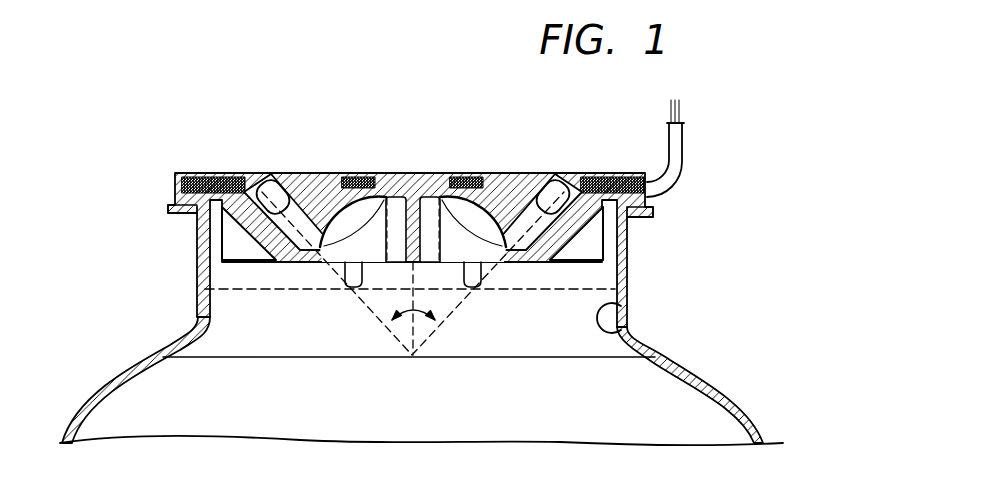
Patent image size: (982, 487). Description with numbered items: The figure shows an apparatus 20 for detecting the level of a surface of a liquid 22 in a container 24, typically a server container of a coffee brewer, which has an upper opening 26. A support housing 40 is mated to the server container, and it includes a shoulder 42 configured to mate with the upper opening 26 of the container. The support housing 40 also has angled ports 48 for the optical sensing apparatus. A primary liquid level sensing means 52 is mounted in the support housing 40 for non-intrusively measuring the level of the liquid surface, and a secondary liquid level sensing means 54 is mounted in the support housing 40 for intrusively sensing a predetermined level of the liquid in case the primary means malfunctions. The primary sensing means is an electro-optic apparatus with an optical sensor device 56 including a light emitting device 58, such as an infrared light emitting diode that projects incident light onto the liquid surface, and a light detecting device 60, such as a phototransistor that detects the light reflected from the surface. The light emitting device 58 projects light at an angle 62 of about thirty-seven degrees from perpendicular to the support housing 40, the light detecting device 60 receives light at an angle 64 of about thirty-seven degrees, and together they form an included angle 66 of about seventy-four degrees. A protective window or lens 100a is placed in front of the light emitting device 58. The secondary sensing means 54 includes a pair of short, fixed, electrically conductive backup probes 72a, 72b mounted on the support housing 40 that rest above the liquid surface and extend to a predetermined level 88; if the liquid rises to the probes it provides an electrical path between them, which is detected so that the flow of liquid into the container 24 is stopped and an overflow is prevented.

The apparatus 20 is at (703, 190).
The liquid 22 is at (273, 350).
The container 24 is at (750, 393).
The upper opening 26 is at (630, 333).
The support housing 40 is at (175, 188).
The shoulder 42 is at (641, 219).
The angled ports 48 is at (297, 215).
The primary liquid level sensing means 52 is at (345, 160).
The secondary liquid level sensing means 54 is at (483, 300).
The optical sensor device 56 is at (192, 122).
The light emitting device 58 is at (270, 180).
The light detecting device 60 is at (551, 185).
The angle 62 is at (380, 288).
The angle 64 is at (425, 296).
The included angle 66 is at (414, 314).
The backup probe 72a is at (400, 282).
The backup probe 72b is at (490, 285).
The predetermined level 88 is at (338, 285).
The protective window or lens 100a is at (388, 195).